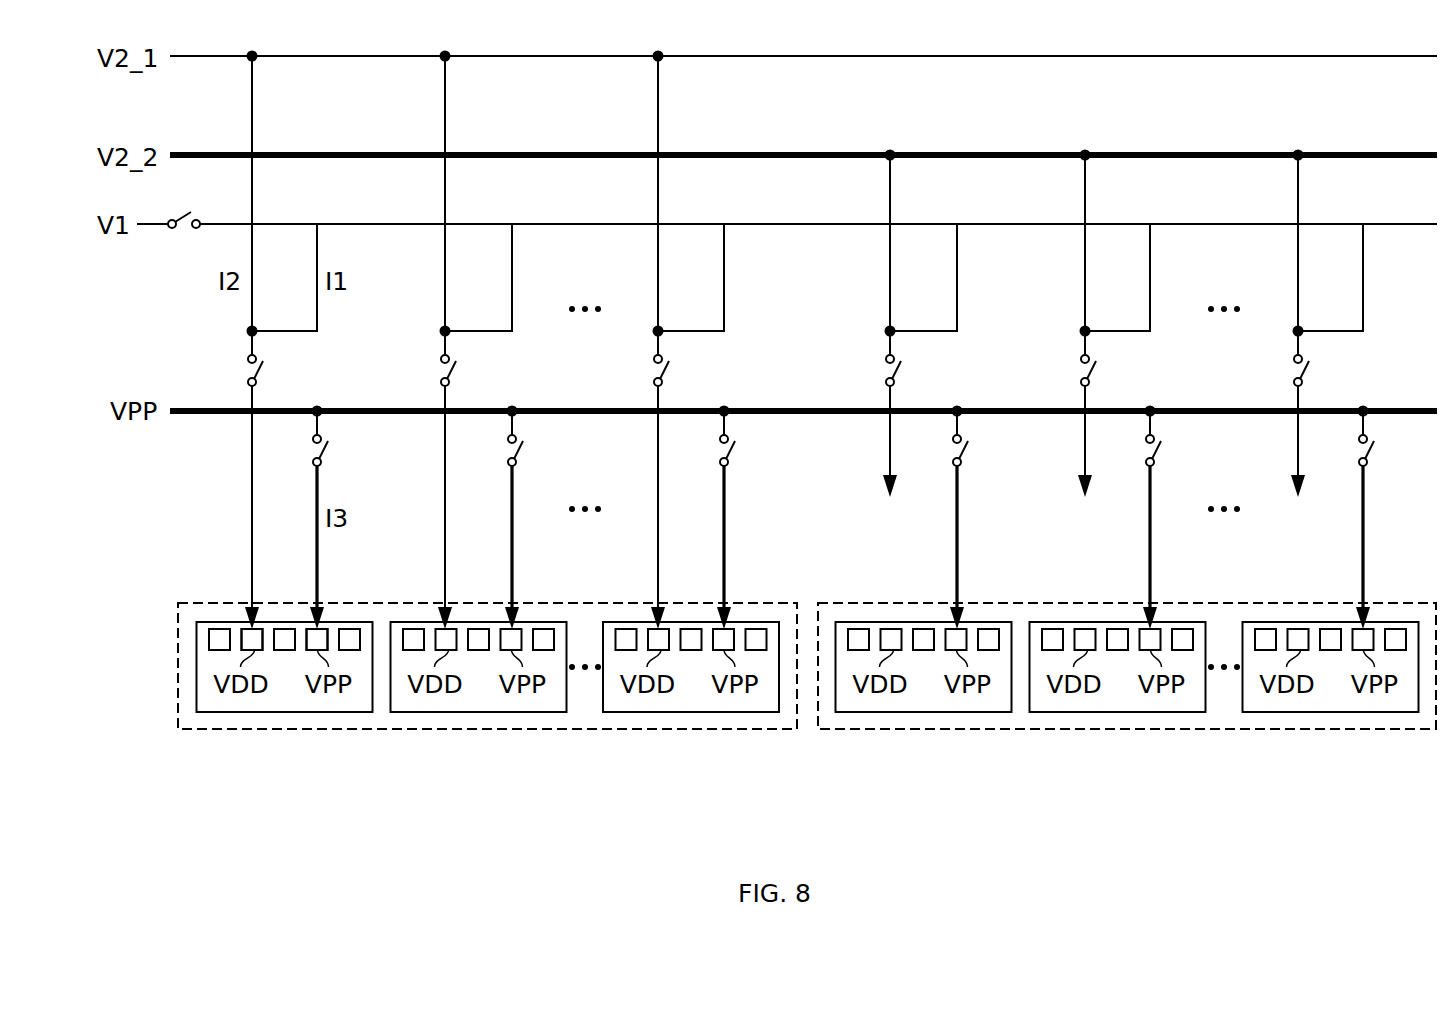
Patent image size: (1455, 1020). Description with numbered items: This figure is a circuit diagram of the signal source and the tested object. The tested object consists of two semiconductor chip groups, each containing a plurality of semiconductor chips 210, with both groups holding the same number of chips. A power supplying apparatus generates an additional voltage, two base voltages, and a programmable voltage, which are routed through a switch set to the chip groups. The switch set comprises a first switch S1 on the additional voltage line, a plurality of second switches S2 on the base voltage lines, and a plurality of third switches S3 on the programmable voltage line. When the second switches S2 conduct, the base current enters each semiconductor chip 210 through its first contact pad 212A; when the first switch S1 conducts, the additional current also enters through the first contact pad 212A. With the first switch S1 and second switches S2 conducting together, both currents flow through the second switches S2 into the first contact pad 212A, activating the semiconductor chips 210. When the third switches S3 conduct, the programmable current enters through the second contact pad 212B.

The semiconductor chip 210 is at (1332, 766).
The first contact pad 212A is at (253, 638).
The second contact pad 212B is at (318, 637).
The first switch S1 is at (184, 206).
The second switch S2 is at (797, 371).
The third switch S3 is at (862, 451).